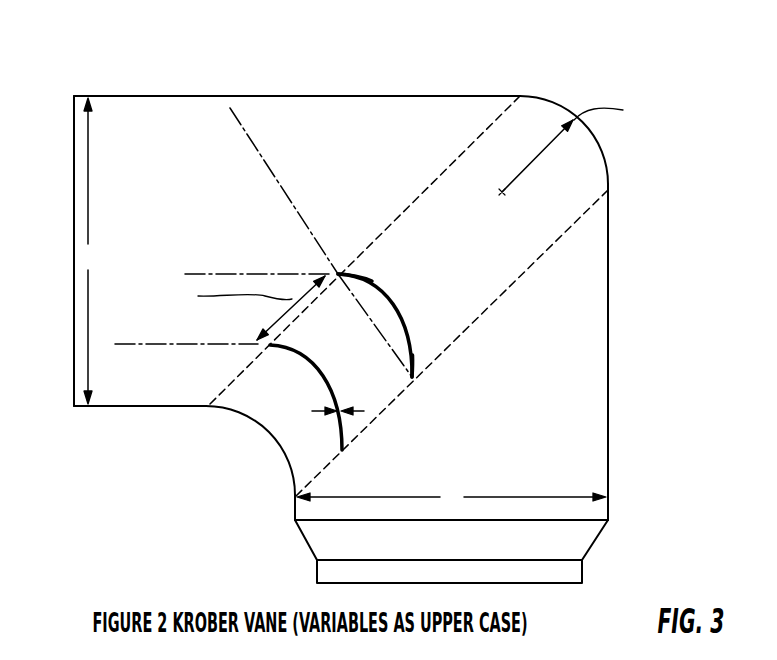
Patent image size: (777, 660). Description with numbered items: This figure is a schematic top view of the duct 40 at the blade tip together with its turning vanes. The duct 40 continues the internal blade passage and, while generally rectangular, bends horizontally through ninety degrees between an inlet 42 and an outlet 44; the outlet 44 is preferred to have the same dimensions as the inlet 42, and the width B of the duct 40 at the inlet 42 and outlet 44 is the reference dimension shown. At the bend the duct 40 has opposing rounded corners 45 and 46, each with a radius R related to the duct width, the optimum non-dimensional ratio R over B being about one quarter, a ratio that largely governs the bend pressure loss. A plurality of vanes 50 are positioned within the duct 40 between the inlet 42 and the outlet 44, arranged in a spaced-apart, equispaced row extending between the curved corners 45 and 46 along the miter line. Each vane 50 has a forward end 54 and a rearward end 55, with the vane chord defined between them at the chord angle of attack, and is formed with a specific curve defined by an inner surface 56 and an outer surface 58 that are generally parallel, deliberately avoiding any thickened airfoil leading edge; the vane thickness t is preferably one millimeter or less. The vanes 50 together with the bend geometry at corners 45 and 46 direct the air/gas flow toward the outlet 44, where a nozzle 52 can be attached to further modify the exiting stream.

The duct 40 is at (664, 262).
The inlet 42 is at (108, 95).
The outlet 44 is at (295, 510).
The rounded corner 45 is at (268, 437).
The rounded corner 46 is at (563, 107).
The vanes 50 is at (413, 343).
The nozzle 52 is at (289, 539).
The forward end 54 is at (340, 272).
The rearward end 55 is at (412, 380).
The inner surface 56 is at (378, 287).
The outer surface 58 is at (400, 303).